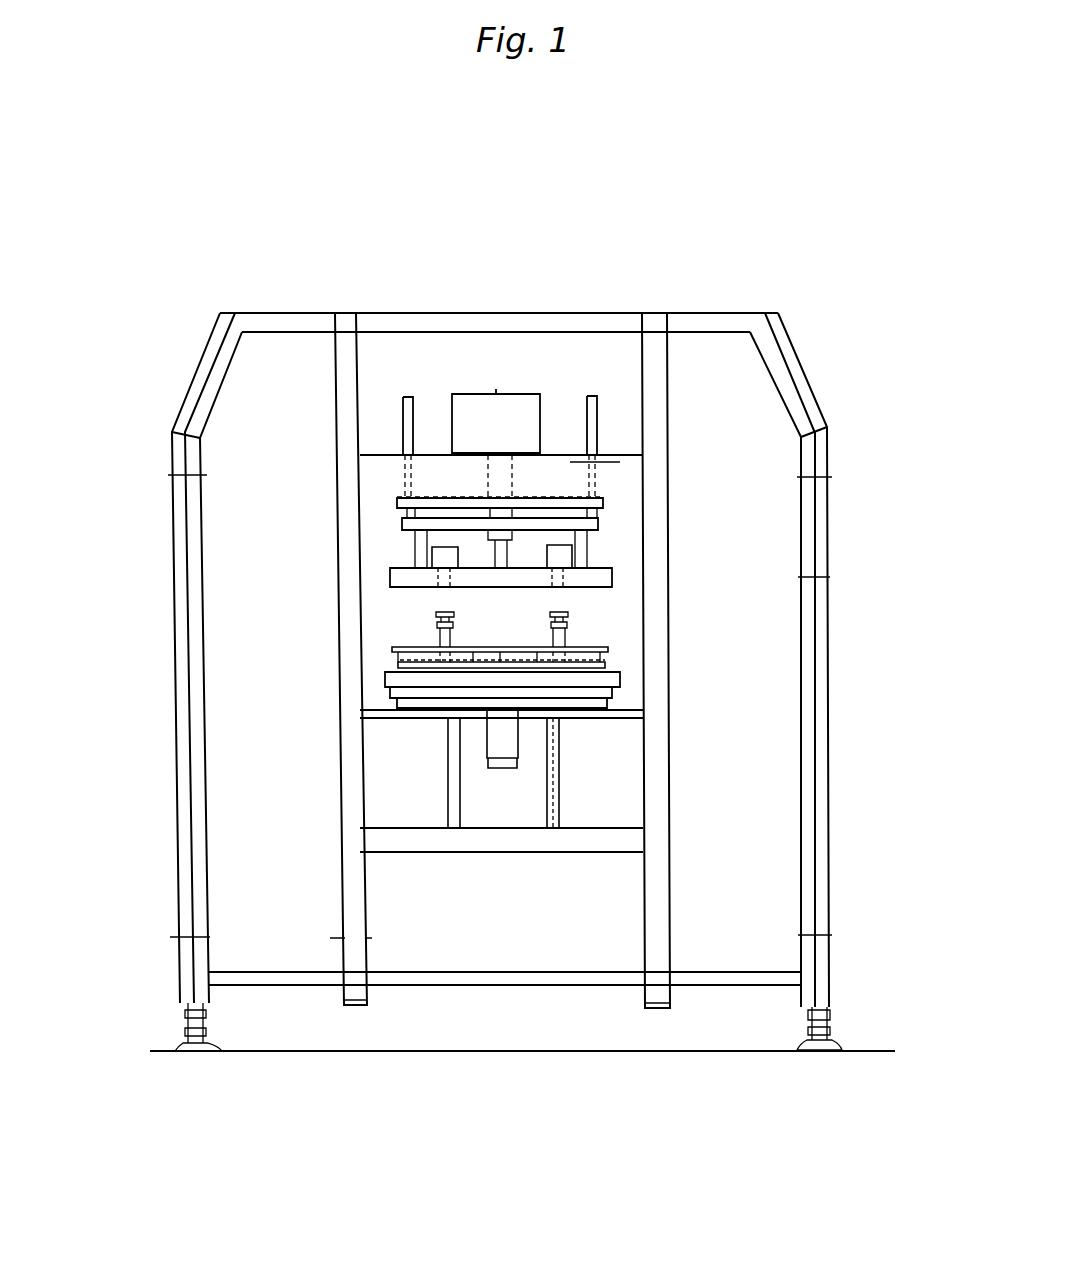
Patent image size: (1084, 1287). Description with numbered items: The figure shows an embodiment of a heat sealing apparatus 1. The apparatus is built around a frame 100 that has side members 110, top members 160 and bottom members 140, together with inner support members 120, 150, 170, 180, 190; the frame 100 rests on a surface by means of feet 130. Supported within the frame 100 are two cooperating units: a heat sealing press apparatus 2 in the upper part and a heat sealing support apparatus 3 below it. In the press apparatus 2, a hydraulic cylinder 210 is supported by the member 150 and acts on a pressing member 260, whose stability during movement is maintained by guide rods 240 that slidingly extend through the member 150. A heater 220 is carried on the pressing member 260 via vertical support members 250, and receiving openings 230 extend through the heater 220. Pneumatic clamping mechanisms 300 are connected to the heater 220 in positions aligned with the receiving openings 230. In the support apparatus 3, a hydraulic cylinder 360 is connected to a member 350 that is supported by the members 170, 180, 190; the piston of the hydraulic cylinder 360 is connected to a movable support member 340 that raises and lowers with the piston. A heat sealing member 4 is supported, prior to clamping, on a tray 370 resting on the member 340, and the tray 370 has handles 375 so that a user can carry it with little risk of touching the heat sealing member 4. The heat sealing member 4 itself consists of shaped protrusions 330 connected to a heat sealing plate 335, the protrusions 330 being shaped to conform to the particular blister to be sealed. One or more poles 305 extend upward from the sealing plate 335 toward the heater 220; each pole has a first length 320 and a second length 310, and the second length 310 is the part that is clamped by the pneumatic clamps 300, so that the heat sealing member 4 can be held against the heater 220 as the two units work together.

The heat sealing apparatus 1 is at (778, 225).
The heat sealing press apparatus 2 is at (427, 372).
The heat sealing support apparatus 3 is at (588, 622).
The heat sealing member 4 is at (375, 664).
The frame 100 is at (247, 303).
The side members 110 is at (828, 496).
The inner support member 120 is at (344, 920).
The feet 130 is at (178, 1043).
The bottom members 140 is at (750, 985).
The member 150 is at (623, 453).
The top members 160 is at (480, 313).
The member 170 is at (452, 853).
The member 180 is at (546, 806).
The member 190 is at (613, 723).
The hydraulic cylinder 210 is at (506, 424).
The heater 220 is at (417, 585).
The receiving openings 230 is at (500, 598).
The guide rods 240 is at (585, 396).
The vertical support members 250 is at (415, 557).
The pressing member 260 is at (400, 510).
The pneumatic clamping mechanisms 300 is at (455, 556).
The poles 305 is at (382, 651).
The second length 310 is at (608, 641).
The first length 320 is at (570, 625).
The shaped protrusions 330 is at (605, 657).
The heat sealing plate 335 is at (612, 650).
The movable support member 340 is at (622, 688).
The member 350 is at (608, 700).
The hydraulic cylinder 360 is at (512, 732).
The tray 370 is at (390, 690).
The handles 375 is at (385, 675).